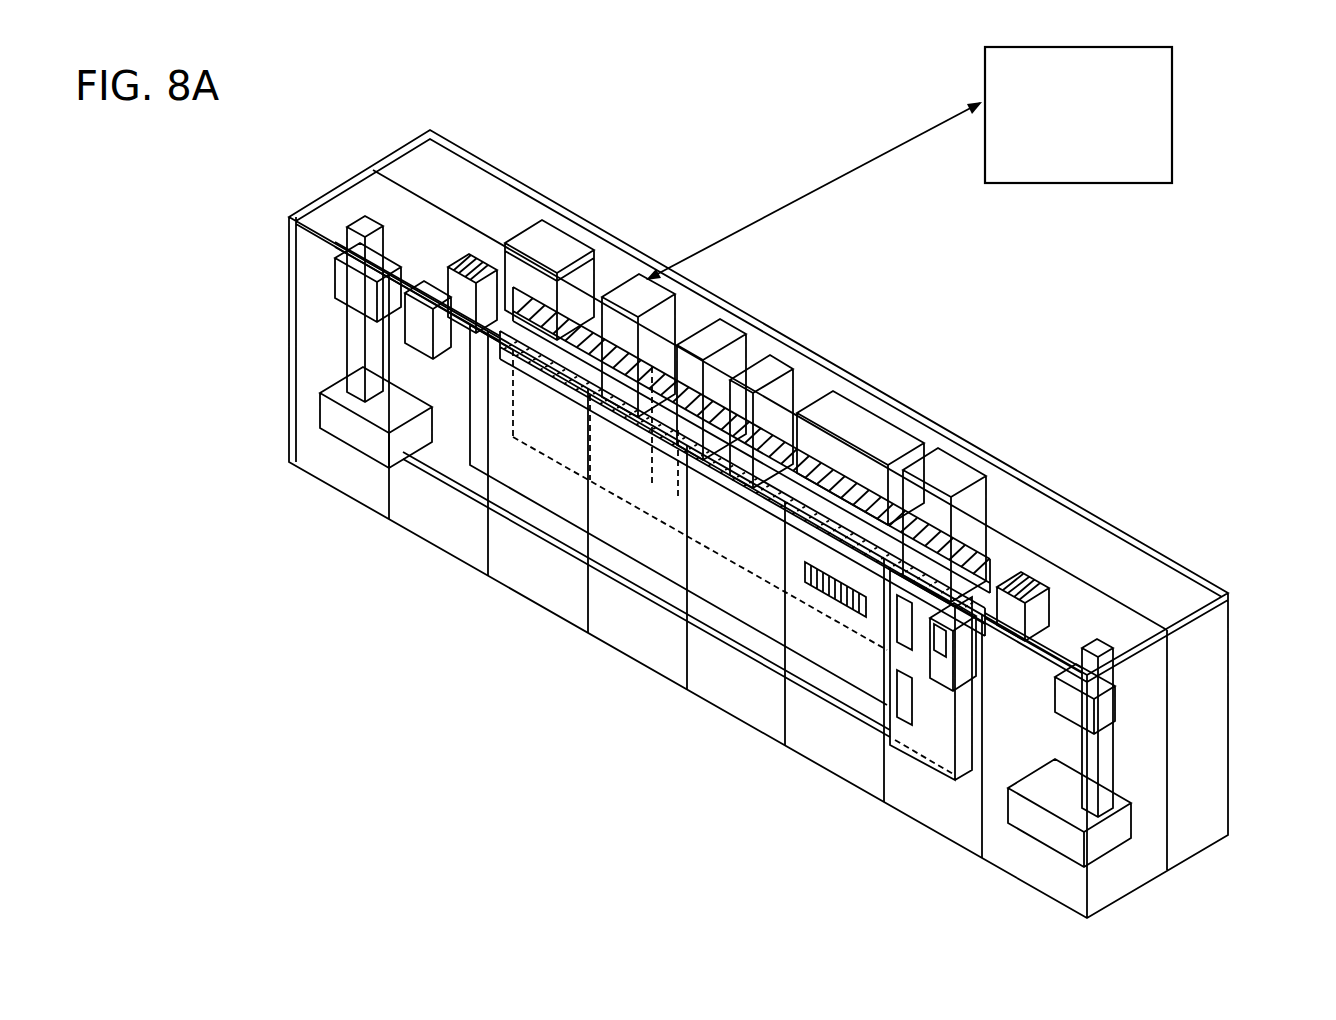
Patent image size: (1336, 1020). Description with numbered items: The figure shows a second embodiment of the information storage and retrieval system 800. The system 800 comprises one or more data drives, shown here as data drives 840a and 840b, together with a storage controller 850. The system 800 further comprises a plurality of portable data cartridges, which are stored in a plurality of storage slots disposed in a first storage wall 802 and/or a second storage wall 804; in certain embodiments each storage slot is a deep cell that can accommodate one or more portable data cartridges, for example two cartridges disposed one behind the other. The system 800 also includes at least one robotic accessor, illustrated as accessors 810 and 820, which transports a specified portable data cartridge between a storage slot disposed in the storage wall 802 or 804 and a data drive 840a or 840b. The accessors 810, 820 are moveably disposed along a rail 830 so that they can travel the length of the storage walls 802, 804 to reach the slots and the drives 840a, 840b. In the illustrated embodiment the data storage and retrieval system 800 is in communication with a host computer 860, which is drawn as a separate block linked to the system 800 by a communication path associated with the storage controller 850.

The information storage and retrieval system 800 is at (688, 764).
The first storage wall 802 is at (608, 335).
The second storage wall 804 is at (521, 478).
The robotic accessor 810 is at (342, 283).
The robotic accessor 820 is at (1110, 707).
The rail 830 is at (625, 585).
The data drive 840a is at (738, 340).
The data drive 840b is at (790, 365).
The storage controller 850 is at (650, 272).
The host computer 860 is at (1078, 115).